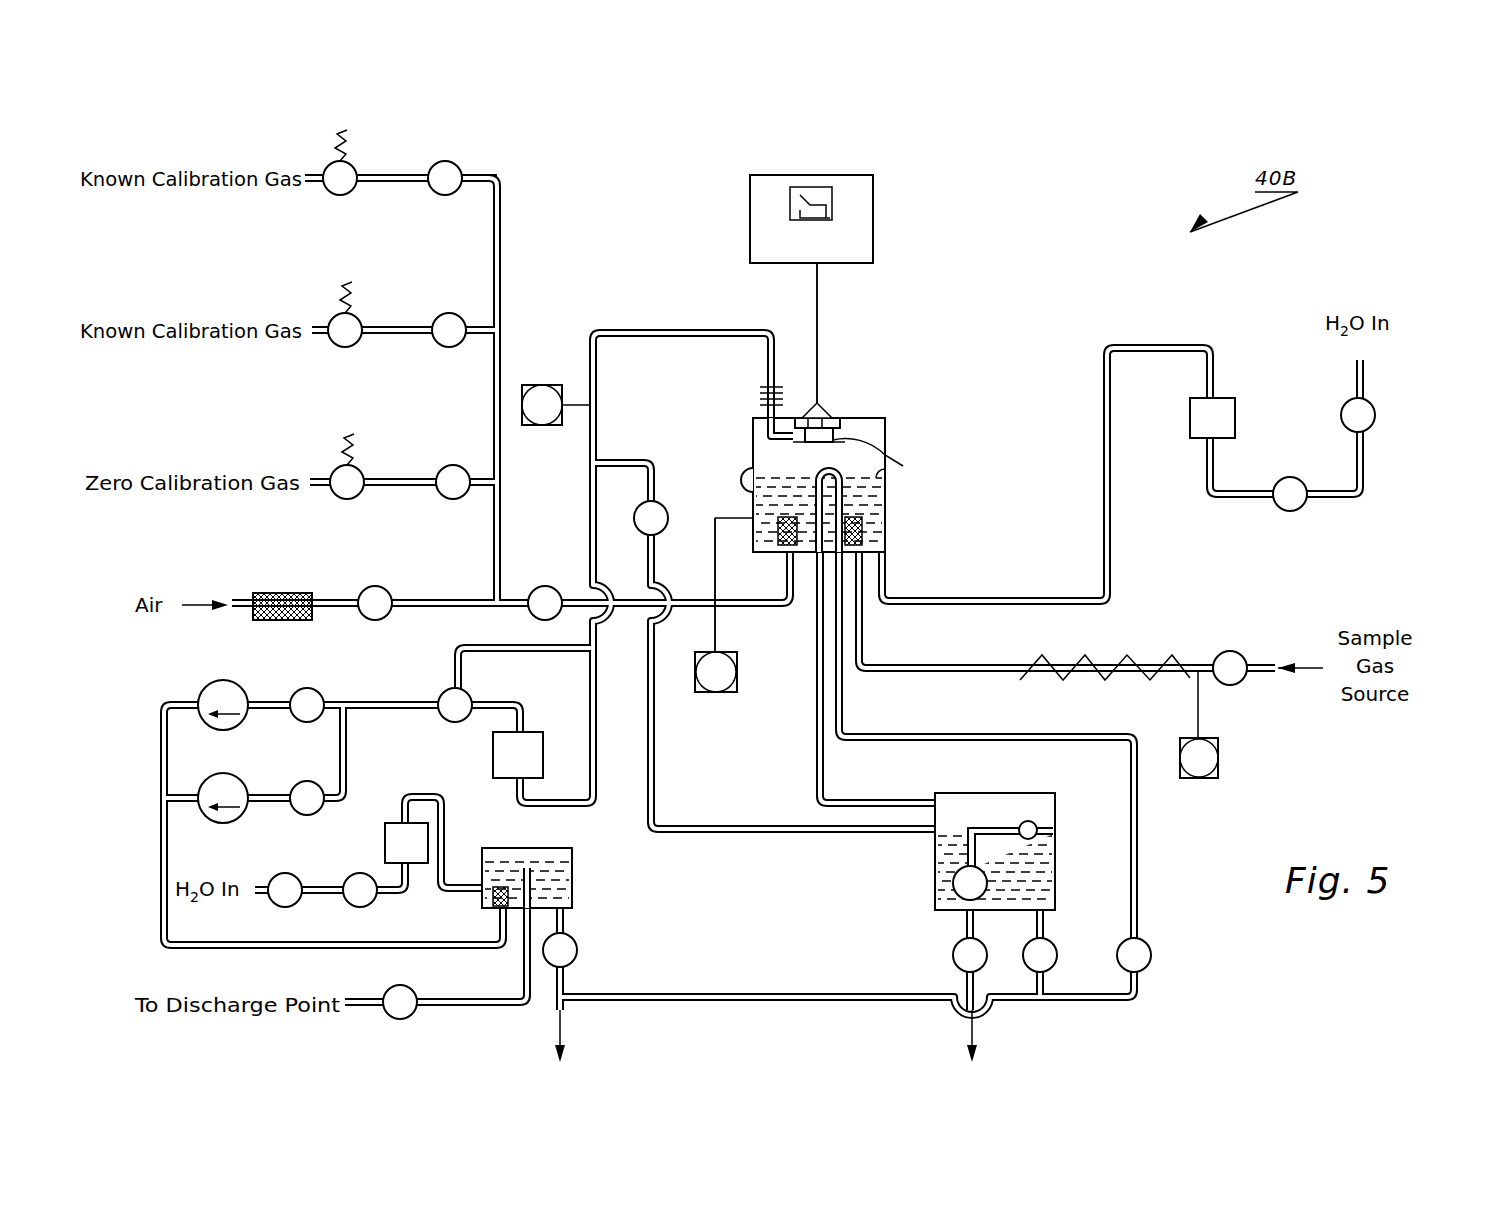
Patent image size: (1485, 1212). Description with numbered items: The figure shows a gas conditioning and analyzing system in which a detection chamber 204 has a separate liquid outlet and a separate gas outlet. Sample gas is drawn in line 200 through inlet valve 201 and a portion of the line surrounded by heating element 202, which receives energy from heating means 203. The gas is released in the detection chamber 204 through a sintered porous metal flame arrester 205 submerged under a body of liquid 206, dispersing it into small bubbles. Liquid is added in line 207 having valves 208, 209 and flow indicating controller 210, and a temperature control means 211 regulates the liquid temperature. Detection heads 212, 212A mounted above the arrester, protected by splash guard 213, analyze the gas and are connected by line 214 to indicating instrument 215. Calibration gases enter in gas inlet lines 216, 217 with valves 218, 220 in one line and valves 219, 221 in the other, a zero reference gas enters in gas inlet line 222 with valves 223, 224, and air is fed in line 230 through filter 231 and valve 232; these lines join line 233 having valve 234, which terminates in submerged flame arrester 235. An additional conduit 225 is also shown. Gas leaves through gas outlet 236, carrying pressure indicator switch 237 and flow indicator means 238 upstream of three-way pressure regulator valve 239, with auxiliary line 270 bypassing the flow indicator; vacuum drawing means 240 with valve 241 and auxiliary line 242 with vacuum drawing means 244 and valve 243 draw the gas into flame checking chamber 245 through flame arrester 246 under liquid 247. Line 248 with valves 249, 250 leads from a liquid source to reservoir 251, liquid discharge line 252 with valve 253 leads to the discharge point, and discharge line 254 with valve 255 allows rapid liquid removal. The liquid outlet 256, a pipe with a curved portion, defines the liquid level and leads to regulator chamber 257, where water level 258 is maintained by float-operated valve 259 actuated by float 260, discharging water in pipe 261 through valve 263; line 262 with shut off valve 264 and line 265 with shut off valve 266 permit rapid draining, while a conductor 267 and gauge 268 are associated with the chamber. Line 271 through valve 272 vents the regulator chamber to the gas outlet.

The line 200 is at (1262, 673).
The inlet valve 201 is at (1230, 651).
The heating element 202 is at (1130, 655).
The heating means 203 is at (1219, 763).
The detection chamber 204 is at (877, 418).
The sintered porous metal flame arrester 205 is at (862, 541).
The liquid 206 is at (888, 480).
The line 207 is at (1158, 348).
The valve 208 is at (1368, 429).
The valve 209 is at (1290, 513).
The flow indicating controller 210 is at (1236, 418).
The temperature control means 211 is at (745, 488).
The detection head 212 is at (800, 416).
The detection head 212A is at (836, 416).
The splash guard 213 is at (888, 457).
The line 214 is at (817, 301).
The indicating instrument 215 is at (873, 211).
The gas inlet line 216 is at (481, 181).
The gas inlet line 217 is at (479, 336).
The valve 218 is at (462, 167).
The valve 219 is at (438, 316).
The valve 220 is at (350, 192).
The valve 221 is at (332, 316).
The gas inlet line 222 is at (482, 488).
The valve 223 is at (447, 470).
The valve 224 is at (338, 465).
The conduit 225 is at (652, 470).
The line 230 is at (338, 612).
The filter 231 is at (302, 592).
The valve 232 is at (380, 590).
The line 233 is at (584, 612).
The valve 234 is at (545, 586).
The flame arrester 235 is at (782, 542).
The gas outlet 236 is at (645, 330).
The pressure indicator switch 237 is at (542, 385).
The flow indicator means 238 is at (493, 749).
The three-way pressure regulator valve 239 is at (440, 690).
The vacuum drawing means 240 is at (230, 682).
The valve 241 is at (320, 684).
The auxiliary line 242 is at (342, 805).
The valve 243 is at (312, 780).
The vacuum drawing means 244 is at (235, 775).
The flame checking chamber 245 is at (572, 900).
The flame arrester 246 is at (490, 902).
The liquid 247 is at (531, 867).
The line 248 is at (258, 900).
The valve 249 is at (285, 873).
The valve 250 is at (376, 904).
The reservoir 251 is at (390, 823).
The liquid discharge line 252 is at (500, 998).
The valve 253 is at (409, 988).
The discharge line 254 is at (565, 922).
The valve 255 is at (577, 950).
The liquid outlet 256 is at (818, 632).
The regulator chamber 257 is at (935, 868).
The water level 258 is at (1040, 826).
The float-operated valve 259 is at (960, 895).
The float 260 is at (1032, 840).
The pipe 261 is at (976, 928).
The line 262 is at (1045, 925).
The valve 263 is at (952, 958).
The shut off valve 264 is at (1053, 962).
The line 265 is at (1138, 833).
The shut off valve 266 is at (1154, 950).
The conductor 267 is at (715, 631).
The gauge 268 is at (713, 693).
The auxiliary line 270 is at (530, 655).
The line 271 is at (740, 833).
The valve 272 is at (665, 536).